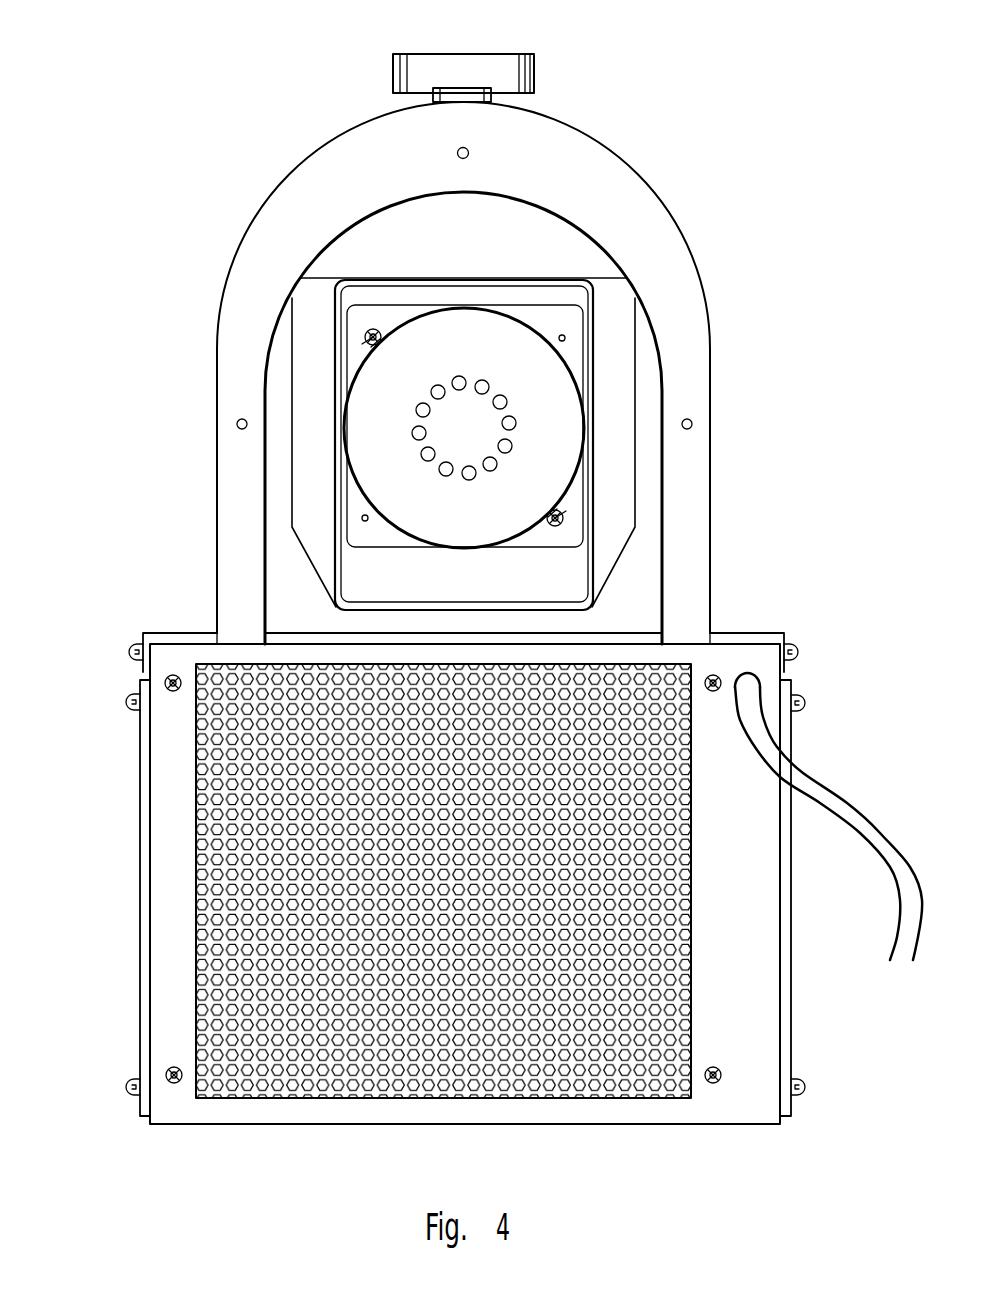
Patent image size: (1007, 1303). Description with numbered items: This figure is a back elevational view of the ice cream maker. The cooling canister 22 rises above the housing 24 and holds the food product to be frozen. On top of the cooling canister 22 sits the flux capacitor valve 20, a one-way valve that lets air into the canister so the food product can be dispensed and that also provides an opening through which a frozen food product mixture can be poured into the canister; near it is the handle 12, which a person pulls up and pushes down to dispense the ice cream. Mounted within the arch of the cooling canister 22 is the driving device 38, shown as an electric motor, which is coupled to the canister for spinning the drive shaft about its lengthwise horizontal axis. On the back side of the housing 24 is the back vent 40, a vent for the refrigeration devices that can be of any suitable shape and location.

The handle 12 is at (475, 55).
The flux capacitor valve 20 is at (457, 90).
The cooling canister 22 is at (292, 208).
The housing 24 is at (138, 731).
The driving device 38 is at (557, 403).
The back vent 40 is at (247, 860).